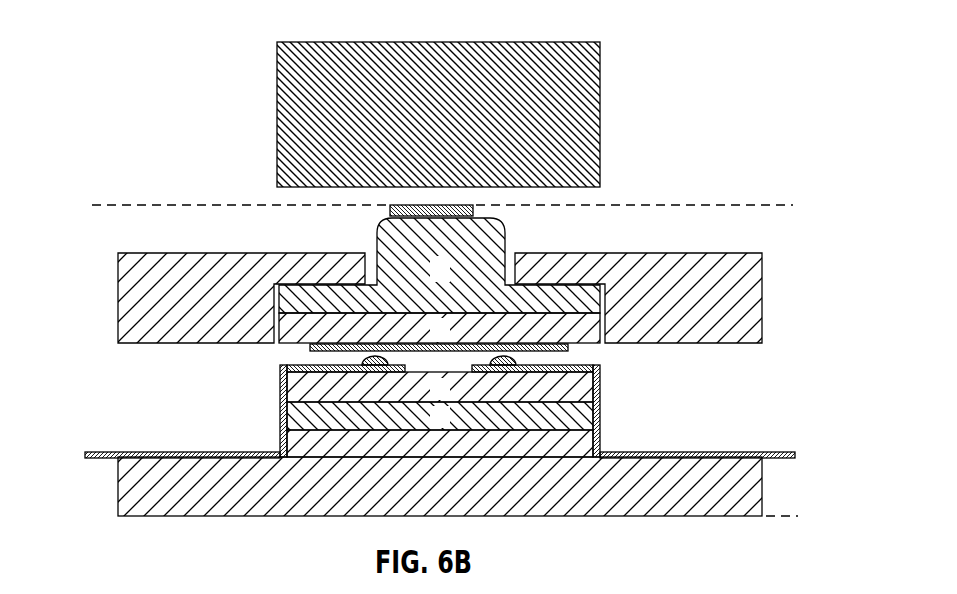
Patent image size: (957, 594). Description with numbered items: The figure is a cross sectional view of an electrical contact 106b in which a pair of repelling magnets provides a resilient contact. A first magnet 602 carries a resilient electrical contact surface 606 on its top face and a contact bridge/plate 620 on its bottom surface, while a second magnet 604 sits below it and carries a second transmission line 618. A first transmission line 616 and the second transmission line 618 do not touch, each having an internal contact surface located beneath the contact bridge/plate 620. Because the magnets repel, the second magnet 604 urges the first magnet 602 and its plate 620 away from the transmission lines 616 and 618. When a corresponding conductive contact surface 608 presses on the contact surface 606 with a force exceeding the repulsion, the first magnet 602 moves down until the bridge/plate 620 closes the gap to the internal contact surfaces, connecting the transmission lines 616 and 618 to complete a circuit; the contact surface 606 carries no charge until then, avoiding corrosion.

The corresponding conductive contact surface 608 is at (600, 113).
The electrical contact surface 606 is at (473, 211).
The first magnet 602 is at (118, 343).
The contact bridge/plate 620 is at (592, 357).
The second magnet 604 is at (280, 365).
The second transmission line 618 is at (110, 452).
The first transmission line 616 is at (742, 452).
The electrical contact 106b is at (793, 205).